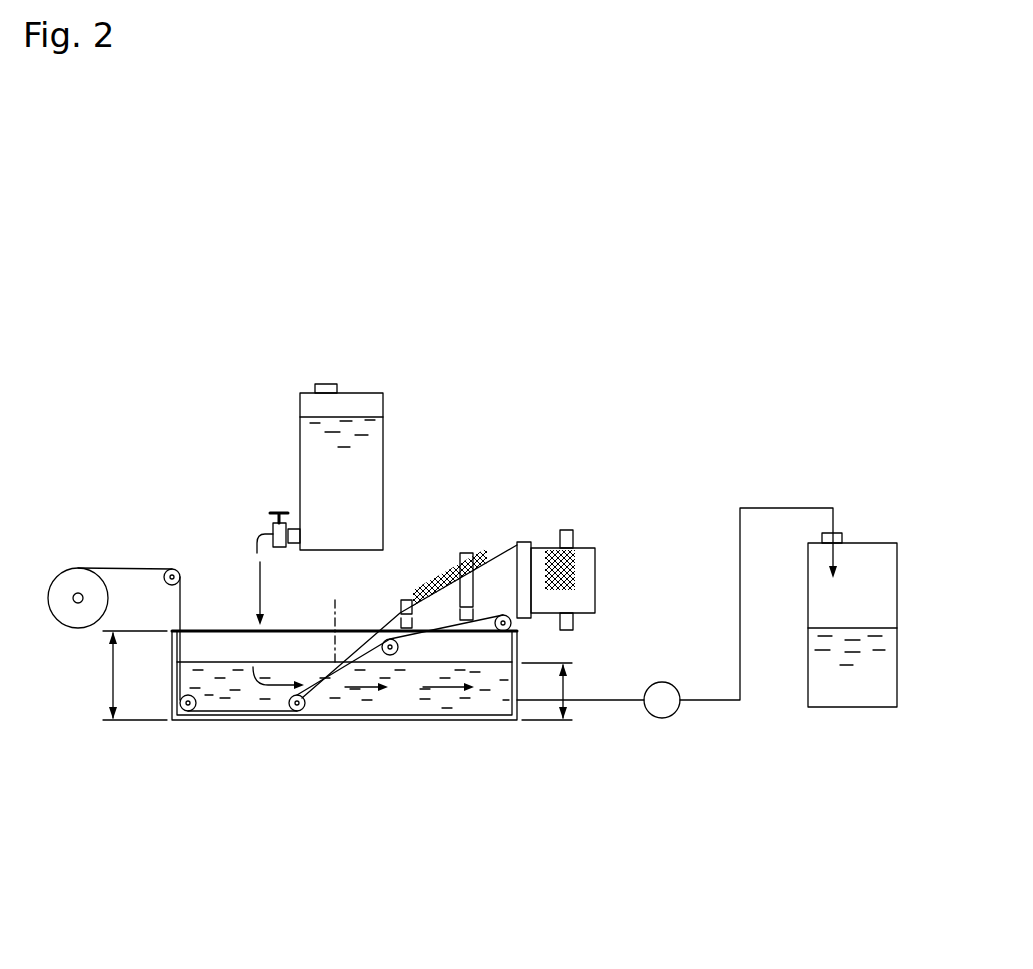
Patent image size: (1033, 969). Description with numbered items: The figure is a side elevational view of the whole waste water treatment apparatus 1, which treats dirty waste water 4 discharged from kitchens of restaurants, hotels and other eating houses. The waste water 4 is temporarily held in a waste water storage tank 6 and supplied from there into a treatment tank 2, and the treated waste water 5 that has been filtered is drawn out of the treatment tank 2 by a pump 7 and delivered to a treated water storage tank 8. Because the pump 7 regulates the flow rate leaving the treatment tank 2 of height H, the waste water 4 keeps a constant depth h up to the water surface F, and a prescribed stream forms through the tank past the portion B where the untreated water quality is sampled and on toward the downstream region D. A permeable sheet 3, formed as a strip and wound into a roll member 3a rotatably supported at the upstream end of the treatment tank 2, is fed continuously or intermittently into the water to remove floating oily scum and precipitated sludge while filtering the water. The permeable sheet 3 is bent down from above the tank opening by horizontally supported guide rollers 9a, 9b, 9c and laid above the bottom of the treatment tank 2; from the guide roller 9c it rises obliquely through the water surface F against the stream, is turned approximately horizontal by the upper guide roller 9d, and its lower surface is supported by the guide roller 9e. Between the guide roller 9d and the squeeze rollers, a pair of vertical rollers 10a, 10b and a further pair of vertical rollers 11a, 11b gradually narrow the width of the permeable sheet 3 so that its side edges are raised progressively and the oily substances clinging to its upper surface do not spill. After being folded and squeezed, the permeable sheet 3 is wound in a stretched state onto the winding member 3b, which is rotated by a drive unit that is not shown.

The waste water treatment apparatus 1 is at (216, 512).
The treatment tank 2 is at (296, 630).
The permeable sheet 3 is at (181, 601).
The roll member 3a is at (78, 567).
The winding member 3b is at (596, 578).
The waste water 4 is at (243, 703).
The treated waste water 5 is at (350, 710).
The waste water storage tank 6 is at (383, 408).
The pump 7 is at (676, 711).
The treated water storage tank 8 is at (868, 570).
The guide roller 9a is at (172, 569).
The guide roller 9b is at (184, 718).
The guide roller 9c is at (306, 713).
The guide roller 9d is at (391, 657).
The guide roller 9e is at (503, 632).
The vertical roller 10a is at (410, 598).
The vertical roller 10b is at (455, 549).
The vertical roller 11a is at (470, 553).
The vertical roller 11b is at (543, 550).
The height of the treatment tank H is at (126, 675).
The depth of the waste water h is at (565, 690).
The portion before treatment B is at (212, 690).
The downstream region D is at (447, 710).
The water surface F is at (334, 615).